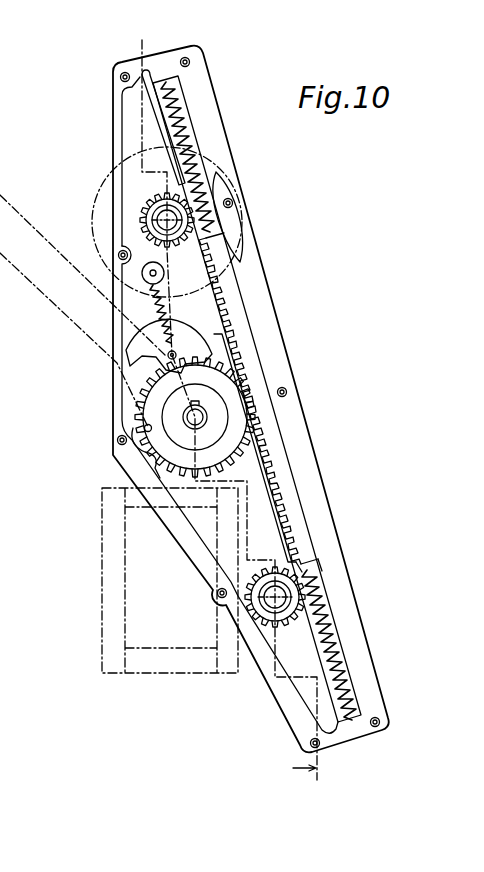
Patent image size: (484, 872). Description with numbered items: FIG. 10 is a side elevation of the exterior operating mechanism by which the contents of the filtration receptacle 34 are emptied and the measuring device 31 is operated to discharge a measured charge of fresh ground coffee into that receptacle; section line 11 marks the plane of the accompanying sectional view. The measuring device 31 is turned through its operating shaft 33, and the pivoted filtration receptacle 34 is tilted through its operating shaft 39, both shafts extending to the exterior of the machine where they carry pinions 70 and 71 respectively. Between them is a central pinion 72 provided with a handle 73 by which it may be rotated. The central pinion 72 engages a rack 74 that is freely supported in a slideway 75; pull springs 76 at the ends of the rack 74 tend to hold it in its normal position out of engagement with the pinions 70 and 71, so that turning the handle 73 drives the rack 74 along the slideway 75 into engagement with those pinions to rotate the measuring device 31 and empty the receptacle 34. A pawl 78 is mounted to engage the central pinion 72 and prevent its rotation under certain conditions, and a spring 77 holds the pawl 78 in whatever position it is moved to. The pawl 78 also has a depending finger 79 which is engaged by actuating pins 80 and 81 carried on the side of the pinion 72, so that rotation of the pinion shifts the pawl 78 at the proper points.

The section line 11- 11 is at (239, 410).
The measuring device 31 is at (95, 186).
The operating shaft 33 is at (160, 221).
The filtration receptacle 34 is at (100, 578).
The operating shaft 39 is at (270, 600).
The pinion 70 is at (143, 210).
The pinion 71 is at (270, 625).
The central pinion 72 is at (232, 397).
The handle 73 is at (48, 304).
The rack 74 is at (278, 509).
The slideway 75 is at (318, 568).
The pull springs 76 is at (190, 137).
The spring 77 is at (150, 338).
The pawl 78 is at (190, 333).
The depending finger 79 is at (145, 427).
The actuating pin 80 is at (135, 440).
The actuating pin 81 is at (255, 412).